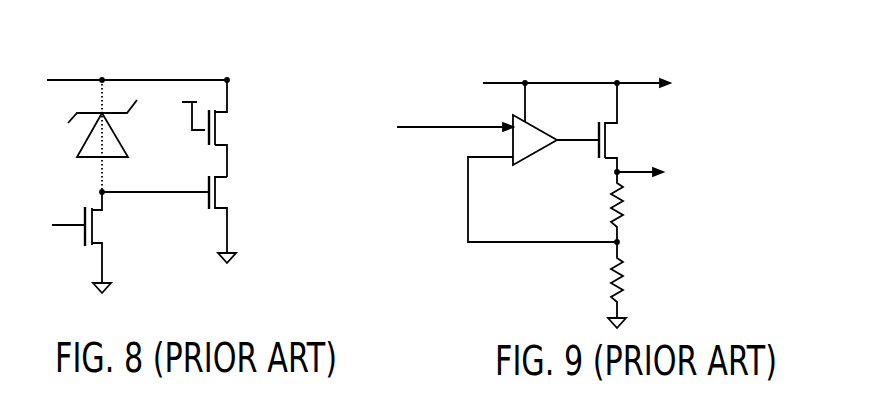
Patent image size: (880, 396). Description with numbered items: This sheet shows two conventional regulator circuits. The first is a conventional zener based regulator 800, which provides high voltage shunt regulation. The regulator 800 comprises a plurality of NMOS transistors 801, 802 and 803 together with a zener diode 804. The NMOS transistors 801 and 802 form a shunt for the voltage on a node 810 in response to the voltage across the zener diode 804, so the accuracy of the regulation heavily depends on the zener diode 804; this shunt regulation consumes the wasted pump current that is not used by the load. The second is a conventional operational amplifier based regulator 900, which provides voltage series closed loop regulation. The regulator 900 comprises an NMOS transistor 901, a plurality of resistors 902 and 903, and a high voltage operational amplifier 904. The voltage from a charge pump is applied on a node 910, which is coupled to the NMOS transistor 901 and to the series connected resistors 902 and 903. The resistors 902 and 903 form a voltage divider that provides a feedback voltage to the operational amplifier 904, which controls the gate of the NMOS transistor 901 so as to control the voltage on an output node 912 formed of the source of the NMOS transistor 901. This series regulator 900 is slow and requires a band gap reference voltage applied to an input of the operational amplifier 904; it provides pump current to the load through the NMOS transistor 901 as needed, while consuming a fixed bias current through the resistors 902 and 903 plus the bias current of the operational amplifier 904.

In FIG. 8, the conventional zener based regulator 800 is at (172, 47).
In FIG. 8, the node 810 is at (229, 80).
In FIG. 8, the NMOS transistor 801 is at (222, 130).
In FIG. 8, the NMOS transistor 802 is at (222, 192).
In FIG. 8, the NMOS transistor 803 is at (95, 225).
In FIG. 8, the zener diode 804 is at (80, 153).
In FIG. 9, the conventional operational amplifier based regulator 900 is at (634, 49).
In FIG. 9, the node 910 is at (668, 82).
In FIG. 9, the NMOS transistor 901 is at (620, 128).
In FIG. 9, the resistor 902 is at (623, 205).
In FIG. 9, the resistor 903 is at (623, 278).
In FIG. 9, the high voltage operational amplifier 904 is at (527, 150).
In FIG. 9, the output node 912 is at (664, 170).